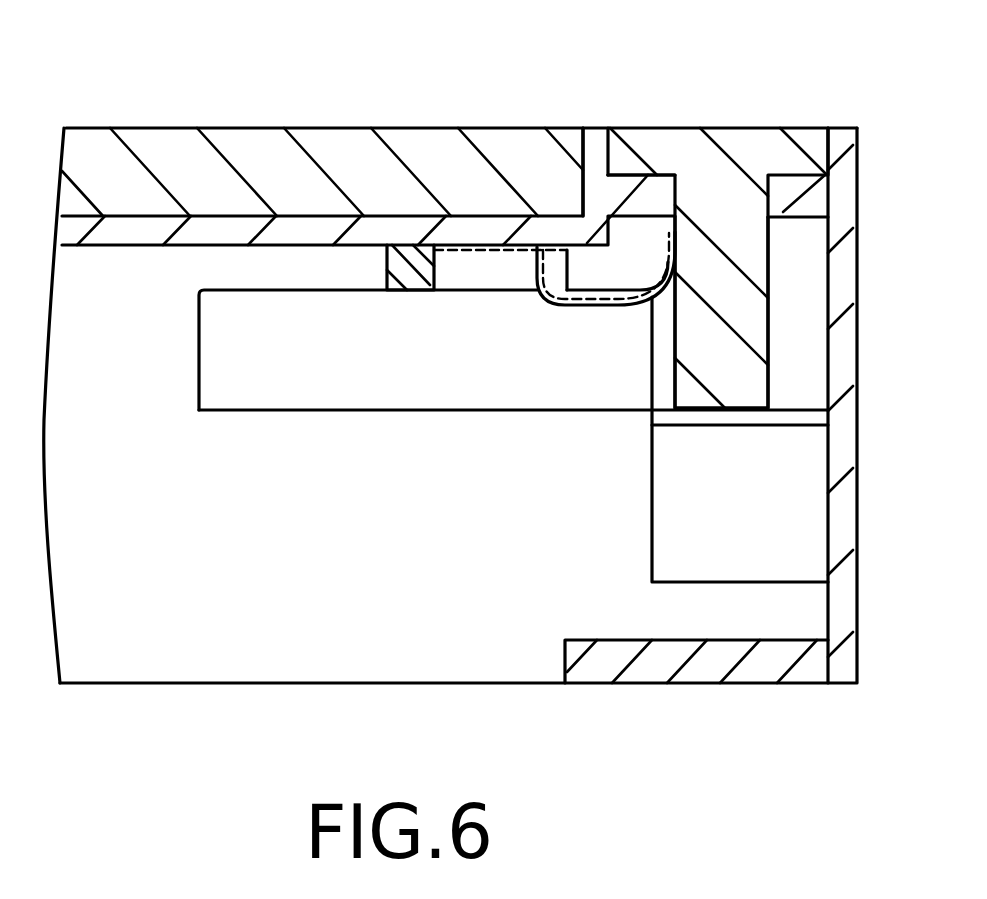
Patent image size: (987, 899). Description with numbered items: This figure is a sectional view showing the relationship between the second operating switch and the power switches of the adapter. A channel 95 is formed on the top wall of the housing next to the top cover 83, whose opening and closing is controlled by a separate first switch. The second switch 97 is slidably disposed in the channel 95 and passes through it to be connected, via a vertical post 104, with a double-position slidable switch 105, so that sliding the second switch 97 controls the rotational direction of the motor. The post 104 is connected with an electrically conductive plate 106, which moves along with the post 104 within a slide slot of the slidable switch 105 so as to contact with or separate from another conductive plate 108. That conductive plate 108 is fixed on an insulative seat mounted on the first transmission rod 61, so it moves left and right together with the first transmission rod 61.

The top cover 83 is at (338, 138).
The channel 95 is at (615, 150).
The second switch 97 is at (755, 128).
The vertical post 104 is at (770, 313).
The double-position slidable switch 105 is at (662, 498).
The electrically conductive plate 106 is at (583, 300).
The conductive plate 108 is at (458, 250).
The first transmission rod 61 is at (758, 675).